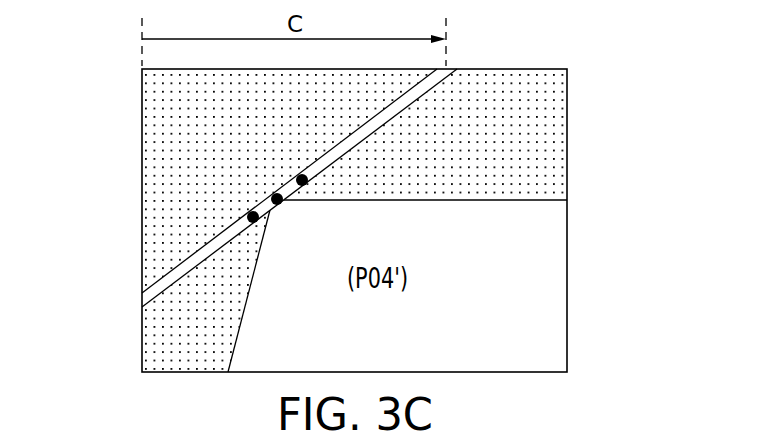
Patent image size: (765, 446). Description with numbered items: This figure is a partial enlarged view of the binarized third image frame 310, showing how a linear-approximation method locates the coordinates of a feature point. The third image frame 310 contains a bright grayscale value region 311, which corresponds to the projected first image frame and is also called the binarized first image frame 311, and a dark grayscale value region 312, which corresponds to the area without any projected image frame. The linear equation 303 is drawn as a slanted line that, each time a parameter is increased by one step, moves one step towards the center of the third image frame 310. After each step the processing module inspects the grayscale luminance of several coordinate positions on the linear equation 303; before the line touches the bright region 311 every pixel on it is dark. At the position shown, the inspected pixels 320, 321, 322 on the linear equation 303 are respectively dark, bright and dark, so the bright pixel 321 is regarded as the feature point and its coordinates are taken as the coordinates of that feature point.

The linear equation 303 is at (416, 99).
The third image frame 310 is at (399, 201).
The bright grayscale value region 311 is at (543, 323).
The dark grayscale value region 312 is at (558, 140).
The pixel 320 is at (258, 222).
The pixel 321 is at (282, 205).
The pixel 322 is at (307, 185).